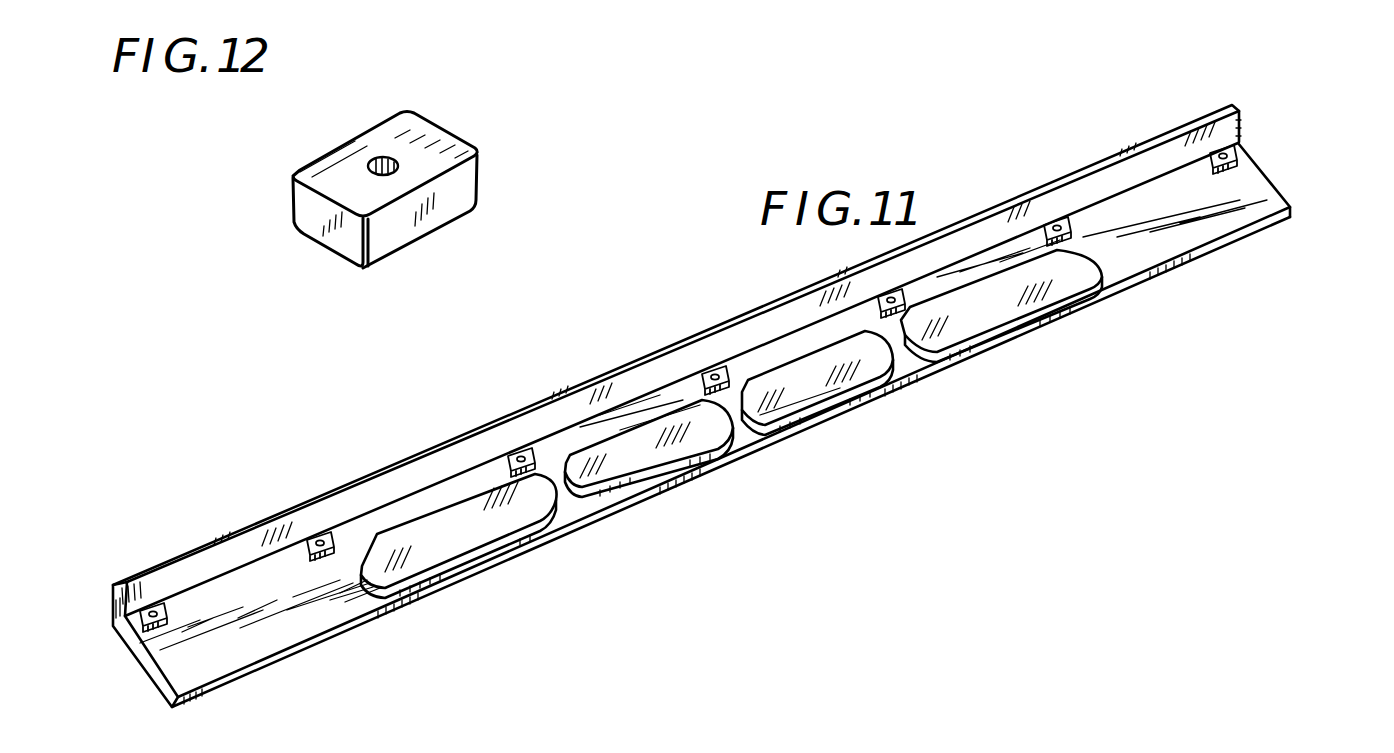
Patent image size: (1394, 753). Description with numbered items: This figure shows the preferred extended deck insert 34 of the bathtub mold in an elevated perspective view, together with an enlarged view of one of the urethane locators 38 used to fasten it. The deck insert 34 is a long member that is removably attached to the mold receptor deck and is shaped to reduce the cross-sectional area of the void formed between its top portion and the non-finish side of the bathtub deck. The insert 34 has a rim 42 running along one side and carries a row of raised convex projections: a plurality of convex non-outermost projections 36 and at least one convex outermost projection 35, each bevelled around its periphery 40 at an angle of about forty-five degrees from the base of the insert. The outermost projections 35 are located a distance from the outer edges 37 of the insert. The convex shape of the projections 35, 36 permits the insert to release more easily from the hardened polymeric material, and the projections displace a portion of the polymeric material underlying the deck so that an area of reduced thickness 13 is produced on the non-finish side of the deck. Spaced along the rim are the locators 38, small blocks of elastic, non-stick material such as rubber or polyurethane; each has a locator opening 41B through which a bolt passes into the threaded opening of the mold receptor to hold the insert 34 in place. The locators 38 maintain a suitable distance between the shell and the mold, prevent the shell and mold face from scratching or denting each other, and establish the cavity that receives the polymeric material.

In FIG. 11, the area of reduced thickness 13 is at (925, 418).
In FIG. 11, the deck insert 34 is at (1302, 188).
In FIG. 11, the convex outermost projection 35 is at (488, 537).
In FIG. 11, the convex non-outermost projection 36 is at (787, 403).
In FIG. 11, the outer edge of the insert 37 is at (157, 686).
In FIG. 12, the locator 38 is at (407, 235).
In FIG. 11, the locator 38 is at (313, 537).
In FIG. 11, the periphery of the projections 40 is at (598, 493).
In FIG. 12, the locator opening 41B is at (376, 160).
In FIG. 11, the rim 42 is at (1085, 169).